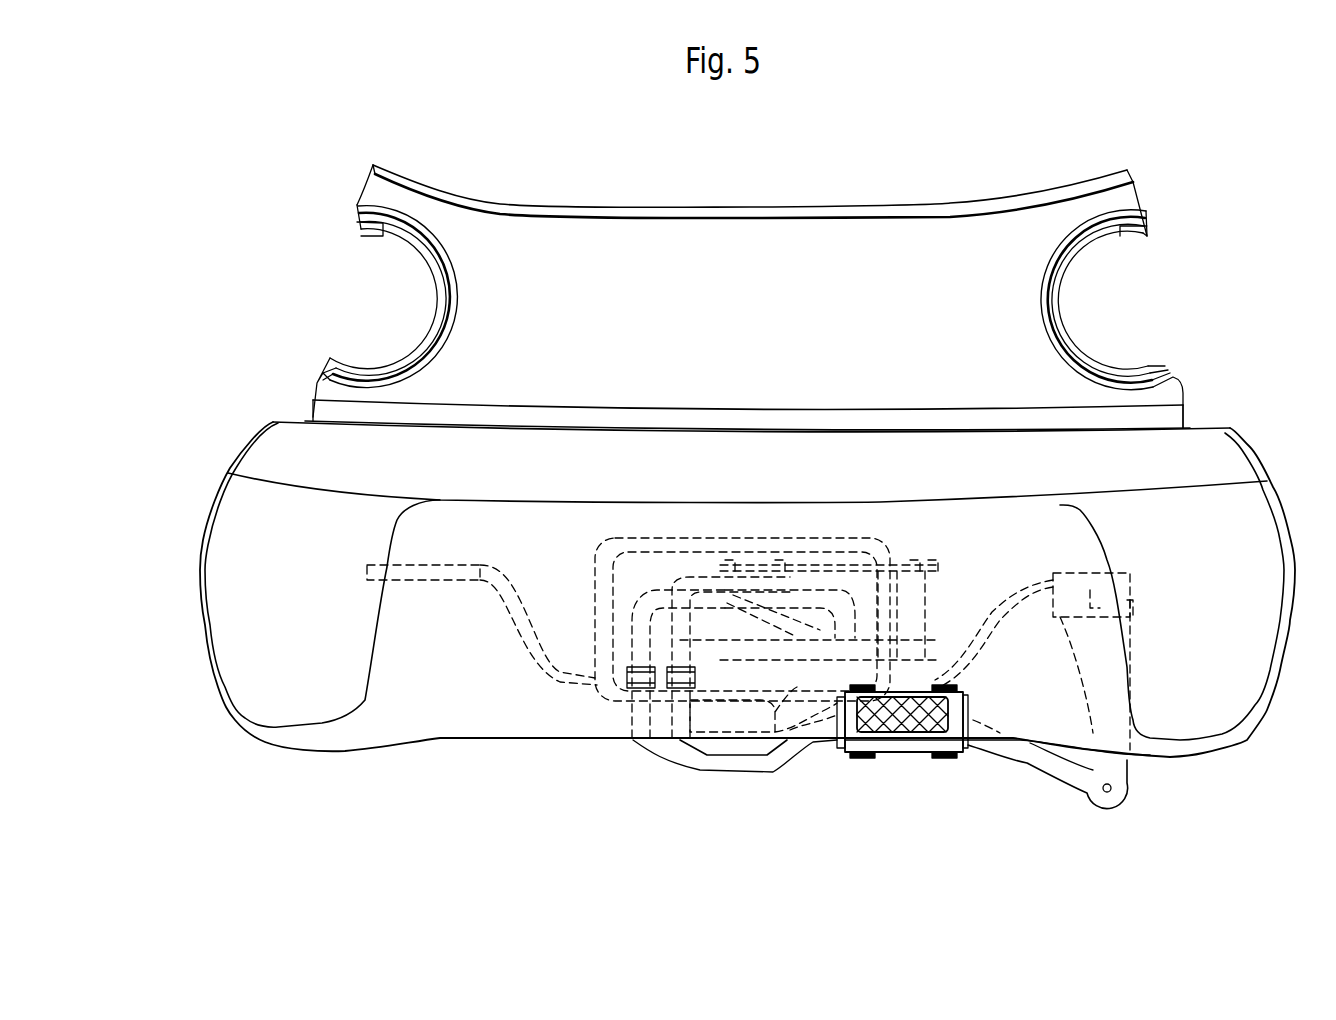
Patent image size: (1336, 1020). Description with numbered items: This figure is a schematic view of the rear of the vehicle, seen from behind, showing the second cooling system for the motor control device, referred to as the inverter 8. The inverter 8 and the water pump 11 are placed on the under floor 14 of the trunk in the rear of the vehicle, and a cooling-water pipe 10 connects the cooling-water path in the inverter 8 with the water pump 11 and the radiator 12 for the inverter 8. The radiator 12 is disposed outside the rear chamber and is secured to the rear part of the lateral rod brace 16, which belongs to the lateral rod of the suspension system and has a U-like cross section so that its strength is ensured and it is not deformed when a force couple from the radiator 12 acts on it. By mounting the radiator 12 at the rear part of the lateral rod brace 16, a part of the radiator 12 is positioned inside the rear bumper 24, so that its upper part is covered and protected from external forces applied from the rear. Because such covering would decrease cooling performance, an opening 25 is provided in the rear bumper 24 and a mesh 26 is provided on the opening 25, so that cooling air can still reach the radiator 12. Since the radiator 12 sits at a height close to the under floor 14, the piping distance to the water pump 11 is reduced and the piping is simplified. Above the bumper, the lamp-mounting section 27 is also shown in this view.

The inverter 8 is at (897, 563).
The cooling-water pipe 10 is at (680, 620).
The water pump 11 is at (840, 622).
The radiator 12 is at (908, 752).
The under floor 14 is at (570, 680).
The lateral rod brace 16 is at (1028, 760).
The rear bumper 24 is at (344, 753).
The opening 25 is at (927, 752).
The mesh 26 is at (898, 752).
The lamp-mounting section 27 is at (1152, 378).